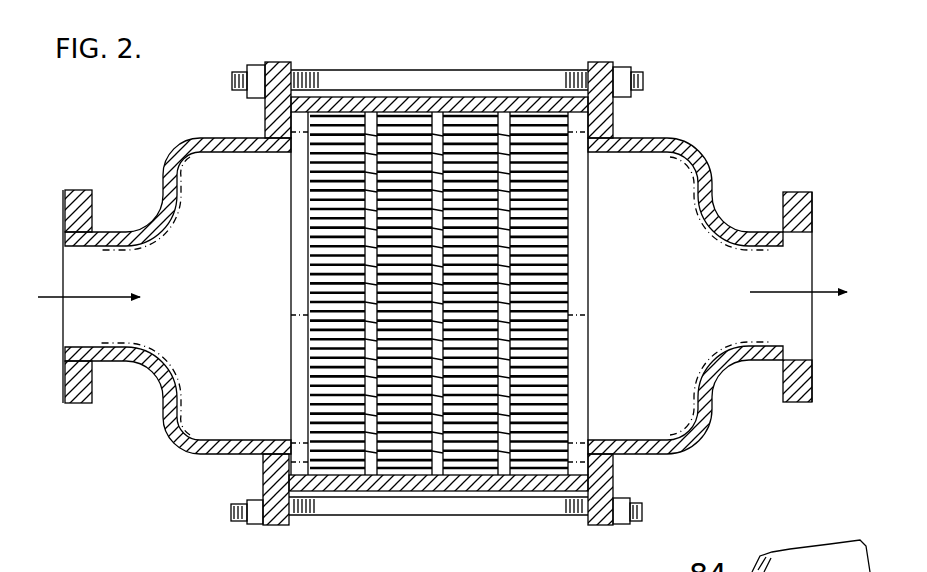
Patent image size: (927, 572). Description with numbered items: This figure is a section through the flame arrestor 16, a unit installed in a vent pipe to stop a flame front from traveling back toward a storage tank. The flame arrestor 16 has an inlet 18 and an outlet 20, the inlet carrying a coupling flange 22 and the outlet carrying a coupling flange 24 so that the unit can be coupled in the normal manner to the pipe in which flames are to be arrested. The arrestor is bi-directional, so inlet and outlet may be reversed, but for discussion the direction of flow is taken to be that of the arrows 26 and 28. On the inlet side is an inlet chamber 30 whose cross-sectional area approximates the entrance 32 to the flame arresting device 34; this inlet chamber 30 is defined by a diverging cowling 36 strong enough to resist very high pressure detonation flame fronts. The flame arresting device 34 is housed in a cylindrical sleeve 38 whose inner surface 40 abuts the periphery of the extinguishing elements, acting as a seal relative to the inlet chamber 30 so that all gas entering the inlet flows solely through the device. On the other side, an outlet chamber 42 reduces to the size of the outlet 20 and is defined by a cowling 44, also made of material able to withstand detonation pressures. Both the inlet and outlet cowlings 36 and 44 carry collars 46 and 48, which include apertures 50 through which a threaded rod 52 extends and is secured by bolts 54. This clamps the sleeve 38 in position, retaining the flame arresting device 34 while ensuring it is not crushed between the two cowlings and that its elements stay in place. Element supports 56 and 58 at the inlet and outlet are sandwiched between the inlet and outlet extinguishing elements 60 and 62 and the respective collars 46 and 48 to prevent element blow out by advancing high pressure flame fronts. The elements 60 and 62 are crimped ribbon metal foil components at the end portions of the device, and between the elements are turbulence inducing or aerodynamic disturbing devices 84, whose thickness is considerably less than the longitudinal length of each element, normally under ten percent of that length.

The flame arrestor 16 is at (662, 100).
The inlet 18 is at (73, 327).
The outlet 20 is at (800, 257).
The coupling flange 22 is at (78, 188).
The coupling flange 24 is at (800, 192).
The flow direction arrow 26 is at (81, 280).
The flow direction arrow 28 is at (795, 278).
The inlet chamber 30 is at (200, 265).
The entrance 32 is at (289, 290).
The flame arresting device 34 is at (442, 291).
The diverging cowling 36 is at (180, 148).
The cylindrical sleeve 38 is at (352, 100).
The inner surface 40 is at (526, 111).
The outlet chamber 42 is at (630, 290).
The cowling 44 is at (700, 166).
The collar 46 is at (283, 62).
The collar 48 is at (598, 61).
The apertures 50 is at (283, 526).
The threaded rod 52 is at (437, 505).
The bolts 54 is at (248, 496).
The element support 56 is at (297, 343).
The element support 58 is at (580, 357).
The extinguishing element 60 is at (318, 181).
The extinguishing element 62 is at (558, 211).
The turbulence inducing devices 84 is at (447, 112).